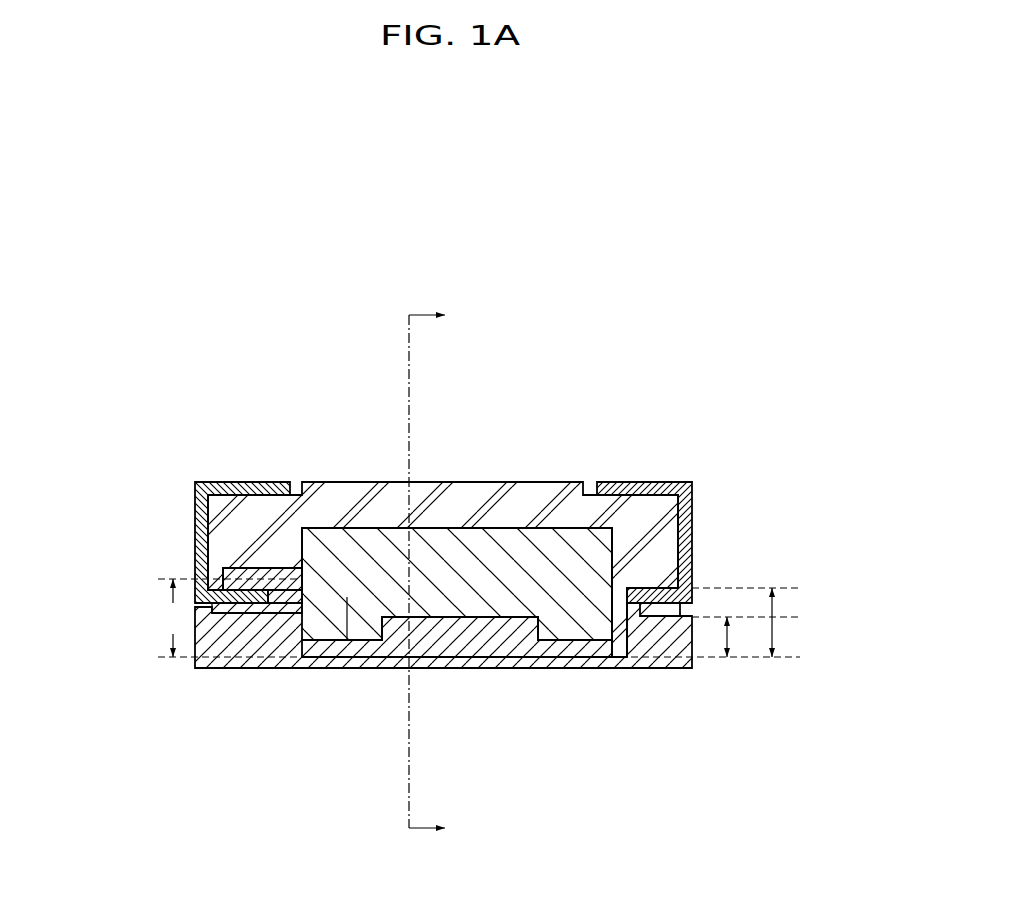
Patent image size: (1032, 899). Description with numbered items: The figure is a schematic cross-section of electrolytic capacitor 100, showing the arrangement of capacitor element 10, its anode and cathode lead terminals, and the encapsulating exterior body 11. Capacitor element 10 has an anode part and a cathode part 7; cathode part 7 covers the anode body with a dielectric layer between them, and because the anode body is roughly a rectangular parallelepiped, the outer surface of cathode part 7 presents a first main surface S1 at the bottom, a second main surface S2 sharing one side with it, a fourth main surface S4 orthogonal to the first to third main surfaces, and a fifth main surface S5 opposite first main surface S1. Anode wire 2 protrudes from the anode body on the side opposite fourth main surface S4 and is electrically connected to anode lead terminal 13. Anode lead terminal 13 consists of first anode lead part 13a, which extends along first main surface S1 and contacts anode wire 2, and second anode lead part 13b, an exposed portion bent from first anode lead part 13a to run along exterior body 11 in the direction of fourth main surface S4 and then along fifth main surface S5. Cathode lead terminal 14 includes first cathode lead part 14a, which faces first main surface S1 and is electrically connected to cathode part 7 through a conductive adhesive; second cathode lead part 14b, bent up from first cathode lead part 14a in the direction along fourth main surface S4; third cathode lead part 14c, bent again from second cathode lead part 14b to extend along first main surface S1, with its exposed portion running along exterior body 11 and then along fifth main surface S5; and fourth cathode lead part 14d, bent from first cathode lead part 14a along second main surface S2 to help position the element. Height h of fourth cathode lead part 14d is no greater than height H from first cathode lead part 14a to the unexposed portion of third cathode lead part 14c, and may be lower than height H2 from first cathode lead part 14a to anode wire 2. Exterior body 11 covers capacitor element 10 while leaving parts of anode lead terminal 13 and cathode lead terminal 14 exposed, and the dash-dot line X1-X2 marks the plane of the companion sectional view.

The electrolytic capacitor 100 is at (665, 332).
The capacitor element 10 is at (470, 596).
The exterior body 11 is at (440, 482).
The cathode part 7 is at (368, 641).
The anode wire 2 is at (286, 592).
The anode lead terminal 13 is at (176, 597).
The first anode lead part 13a is at (238, 588).
The second anode lead part 13b is at (197, 545).
The cathode lead terminal 14 is at (546, 628).
The first cathode lead part 14a is at (585, 668).
The second cathode lead part 14b is at (655, 633).
The third cathode lead part 14c is at (693, 550).
The fourth cathode lead part 14d is at (468, 668).
The first main surface S1 is at (360, 642).
The second main surface S2 is at (506, 527).
The fourth main surface S4 is at (615, 556).
The fifth main surface S5 is at (356, 524).
The height H is at (746, 622).
The height h is at (746, 637).
The height H2 is at (479, 618).
The line X1-X2 end point X1 is at (440, 563).
The line X1-X2 end point X2 is at (440, 827).